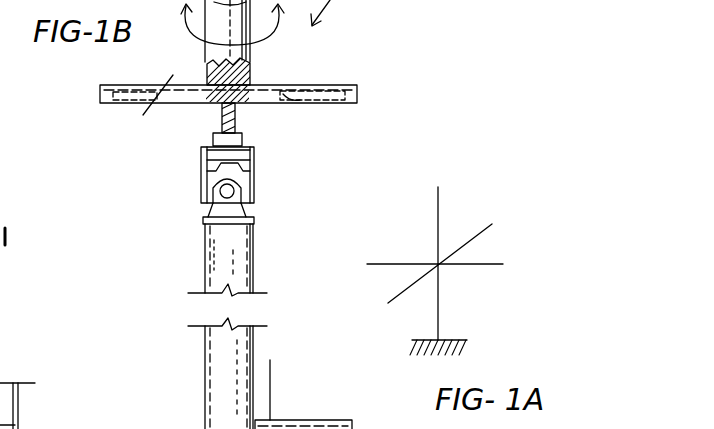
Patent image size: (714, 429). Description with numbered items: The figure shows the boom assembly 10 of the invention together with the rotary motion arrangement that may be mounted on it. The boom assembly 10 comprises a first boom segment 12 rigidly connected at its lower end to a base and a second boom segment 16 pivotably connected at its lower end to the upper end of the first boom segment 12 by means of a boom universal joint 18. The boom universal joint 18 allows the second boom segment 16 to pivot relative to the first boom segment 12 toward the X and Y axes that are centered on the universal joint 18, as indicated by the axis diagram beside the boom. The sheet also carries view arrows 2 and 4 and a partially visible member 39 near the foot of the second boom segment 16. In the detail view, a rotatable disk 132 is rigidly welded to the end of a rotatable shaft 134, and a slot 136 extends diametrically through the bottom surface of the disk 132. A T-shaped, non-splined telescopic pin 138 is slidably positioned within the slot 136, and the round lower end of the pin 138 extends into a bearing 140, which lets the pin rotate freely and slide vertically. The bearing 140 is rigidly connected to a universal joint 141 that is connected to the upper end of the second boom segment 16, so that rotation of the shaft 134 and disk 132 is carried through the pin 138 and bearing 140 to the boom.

In FIG. 1A, the boom assembly 10 is at (50, 428).
In FIG. 1A, the first boom segment 12 is at (440, 311).
In FIG. 1B, the second boom segment 16 is at (204, 231).
In FIG. 1A, the second boom segment 16 is at (439, 200).
In FIG. 1A, the boom universal joint 18 is at (440, 268).
In FIG. 1A, the view direction of FIG. 2 is at (270, 360).
In FIG. 1A, the view direction of FIG. 4 is at (410, 428).
In FIG. 1A, the base member 39 is at (381, 428).
In FIG. 1B, the rotatable disk 132 is at (303, 84).
In FIG. 1B, the rotatable shaft 134 is at (250, 70).
In FIG. 1B, the slot 136 is at (284, 101).
In FIG. 1B, the telescopic pin 138 is at (233, 124).
In FIG. 1B, the bearing 140 is at (214, 134).
In FIG. 1B, the universal joint 141 is at (266, 187).